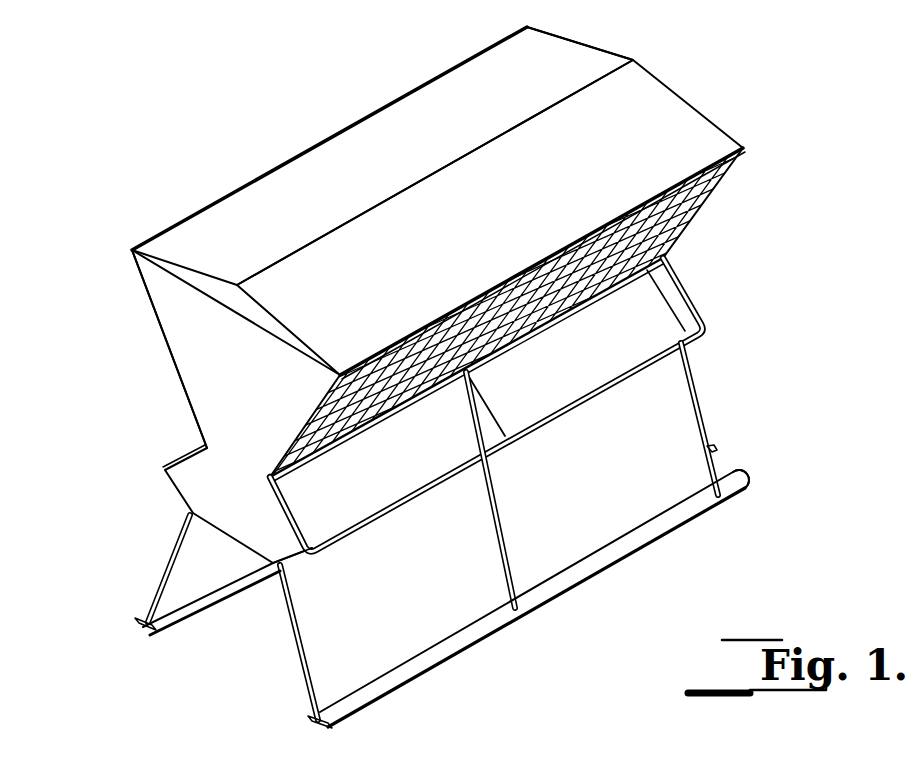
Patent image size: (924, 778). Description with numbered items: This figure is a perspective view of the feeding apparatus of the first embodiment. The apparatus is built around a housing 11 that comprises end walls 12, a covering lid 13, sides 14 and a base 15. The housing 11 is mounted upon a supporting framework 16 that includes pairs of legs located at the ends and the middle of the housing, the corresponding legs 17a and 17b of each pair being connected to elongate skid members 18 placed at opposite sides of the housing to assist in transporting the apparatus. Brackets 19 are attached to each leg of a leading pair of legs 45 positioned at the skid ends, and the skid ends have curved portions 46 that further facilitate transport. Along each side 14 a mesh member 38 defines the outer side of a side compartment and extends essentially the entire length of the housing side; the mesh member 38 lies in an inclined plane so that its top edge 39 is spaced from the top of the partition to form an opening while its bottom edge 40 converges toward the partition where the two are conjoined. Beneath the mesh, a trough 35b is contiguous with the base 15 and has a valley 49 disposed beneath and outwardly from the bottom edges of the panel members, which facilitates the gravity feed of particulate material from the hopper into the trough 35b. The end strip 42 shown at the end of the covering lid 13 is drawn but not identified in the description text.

The feeder 11 is at (104, 374).
The hopper body 12 is at (236, 363).
The cover top panel 13 is at (382, 156).
The cover 14 is at (236, 166).
The leg assembly 15 is at (381, 542).
The front leg 16 is at (296, 668).
The rear leg 17a is at (170, 558).
The center leg 17b is at (506, 502).
The rail 18 is at (217, 597).
The clip 19 is at (715, 447).
The trough 35b is at (486, 404).
The mesh frame tube 38 is at (696, 220).
The mesh panel 39 is at (536, 262).
The partition 40 is at (498, 357).
The end strip 42 is at (234, 316).
The right leg 45 is at (681, 404).
The rail end cap 46 is at (746, 481).
The trough end section 49 is at (583, 387).